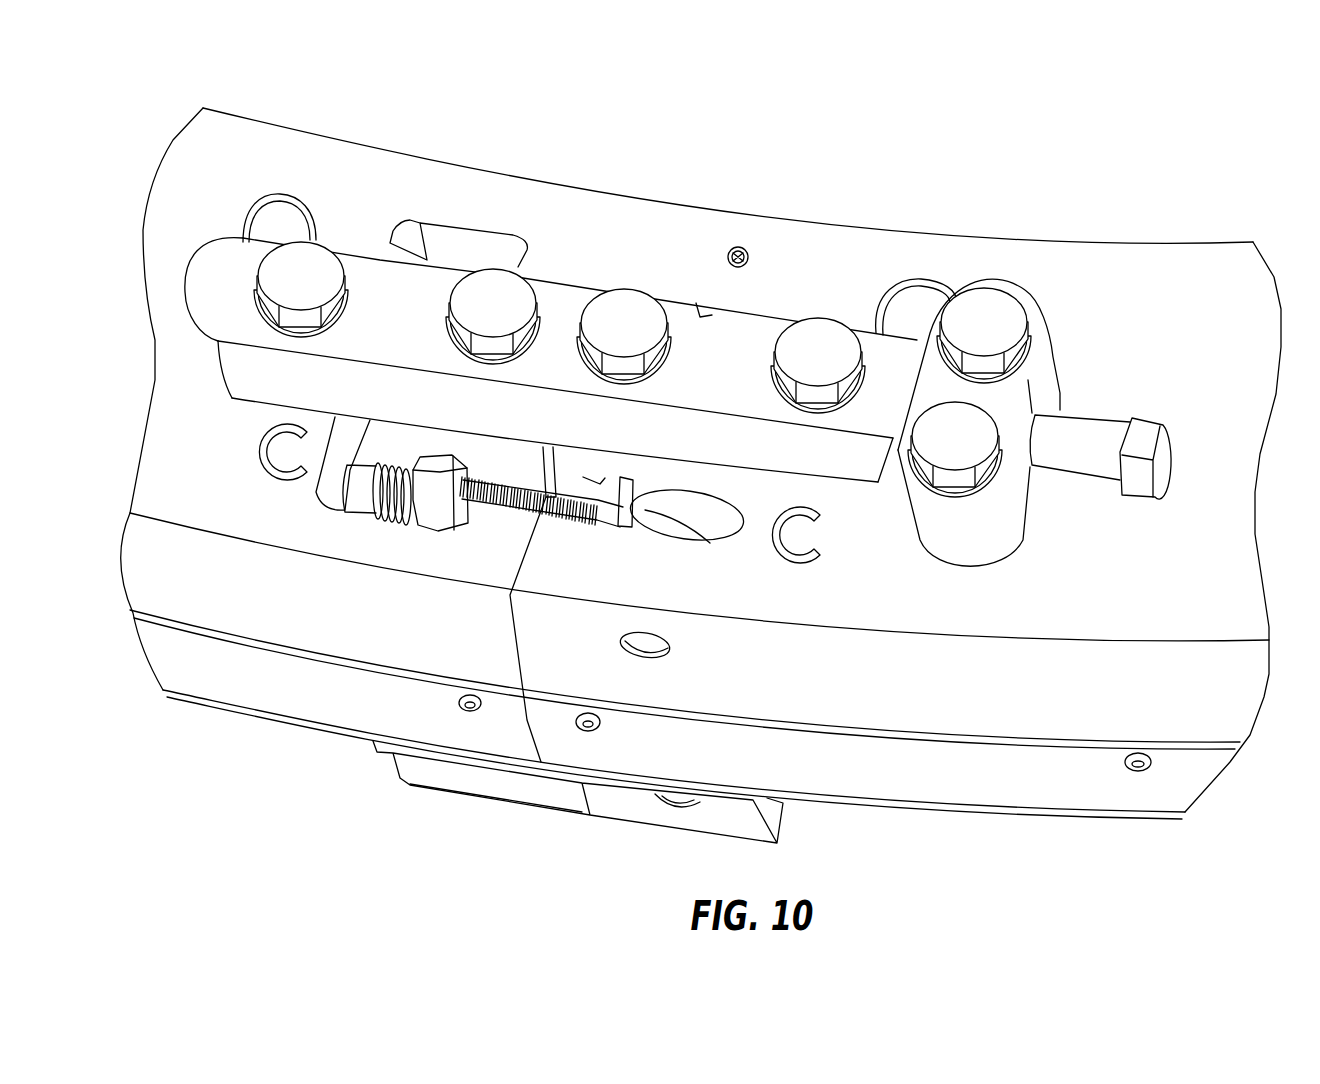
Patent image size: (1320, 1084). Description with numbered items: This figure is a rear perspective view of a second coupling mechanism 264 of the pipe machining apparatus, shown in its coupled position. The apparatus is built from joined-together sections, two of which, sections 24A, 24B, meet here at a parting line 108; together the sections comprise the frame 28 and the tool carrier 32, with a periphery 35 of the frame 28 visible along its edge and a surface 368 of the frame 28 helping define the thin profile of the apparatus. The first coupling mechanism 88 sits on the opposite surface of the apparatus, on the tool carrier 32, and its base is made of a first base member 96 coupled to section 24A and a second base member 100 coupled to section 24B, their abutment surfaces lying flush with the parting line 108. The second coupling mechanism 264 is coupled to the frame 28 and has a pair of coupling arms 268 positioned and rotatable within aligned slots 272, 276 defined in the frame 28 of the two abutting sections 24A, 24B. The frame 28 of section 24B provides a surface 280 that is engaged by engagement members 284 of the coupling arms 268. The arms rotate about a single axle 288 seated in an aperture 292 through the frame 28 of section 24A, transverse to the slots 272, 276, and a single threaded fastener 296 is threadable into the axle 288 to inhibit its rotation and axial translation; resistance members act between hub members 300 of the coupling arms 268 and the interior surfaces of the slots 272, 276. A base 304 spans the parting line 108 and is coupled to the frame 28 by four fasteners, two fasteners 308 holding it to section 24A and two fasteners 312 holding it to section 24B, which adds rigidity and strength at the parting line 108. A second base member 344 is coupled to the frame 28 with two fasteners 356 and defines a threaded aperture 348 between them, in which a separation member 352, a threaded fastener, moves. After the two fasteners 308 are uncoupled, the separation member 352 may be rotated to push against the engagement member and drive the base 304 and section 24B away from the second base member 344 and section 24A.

The section 24A is at (1133, 237).
The section 24B is at (405, 149).
The frame 28 is at (817, 250).
The tool carrier 32 is at (946, 812).
The periphery 35 is at (232, 688).
The coupling mechanism 88 is at (402, 790).
The first base member 96 is at (680, 813).
The second base member 100 is at (497, 787).
The parting line 108 is at (600, 283).
The second coupling mechanism 264 is at (1014, 276).
The coupling arms 268 is at (420, 523).
The slot 272 is at (706, 314).
The slot 276 is at (463, 235).
The surface 280 is at (425, 531).
The engagement members 284 is at (373, 503).
The axle 288 is at (621, 645).
The aperture 292 is at (667, 654).
The threaded fastener 296 is at (739, 243).
The hub members 300 is at (680, 517).
The base 304 is at (367, 268).
The fasteners 308 is at (603, 313).
The fasteners 312 is at (294, 268).
The second base member 344 is at (1005, 398).
The threaded aperture 348 is at (1032, 453).
The separation member 352 is at (1107, 433).
The fasteners 356 is at (981, 310).
The surface 368 is at (270, 152).